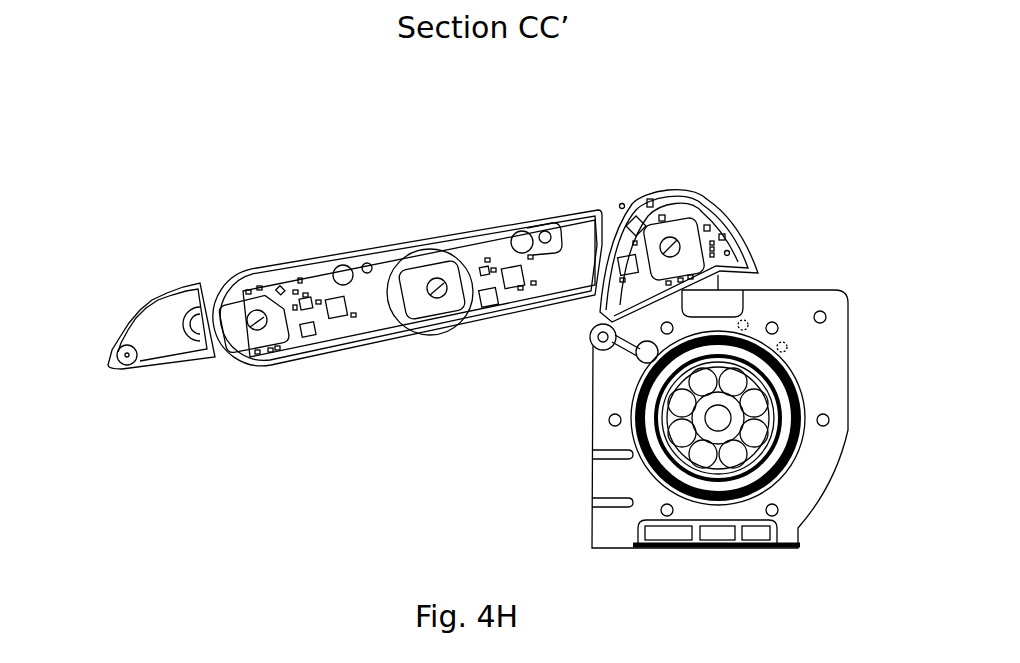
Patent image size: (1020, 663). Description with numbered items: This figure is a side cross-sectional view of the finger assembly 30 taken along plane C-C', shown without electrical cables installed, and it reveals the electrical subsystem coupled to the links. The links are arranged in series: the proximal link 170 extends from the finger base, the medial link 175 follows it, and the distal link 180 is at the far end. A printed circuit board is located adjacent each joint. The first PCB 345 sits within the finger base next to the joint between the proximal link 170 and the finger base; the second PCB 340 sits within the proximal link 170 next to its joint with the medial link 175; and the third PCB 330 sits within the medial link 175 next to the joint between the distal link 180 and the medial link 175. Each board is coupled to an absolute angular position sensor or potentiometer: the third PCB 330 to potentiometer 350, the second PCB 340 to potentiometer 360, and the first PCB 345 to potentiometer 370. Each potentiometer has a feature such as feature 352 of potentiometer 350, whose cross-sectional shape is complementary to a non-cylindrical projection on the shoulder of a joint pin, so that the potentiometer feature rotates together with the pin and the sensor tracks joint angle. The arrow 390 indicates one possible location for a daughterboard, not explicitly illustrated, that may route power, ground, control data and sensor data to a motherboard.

The finger assembly 30 is at (143, 157).
The proximal link 170 is at (492, 337).
The medial link 175 is at (317, 360).
The distal link 180 is at (163, 368).
The third PCB 330 is at (318, 282).
The second PCB 340 is at (503, 252).
The first PCB 345 is at (720, 208).
The potentiometer 350 is at (240, 298).
The feature 352 is at (253, 330).
The potentiometer 360 is at (428, 265).
The potentiometer 370 is at (680, 226).
The arrow 390 is at (777, 574).